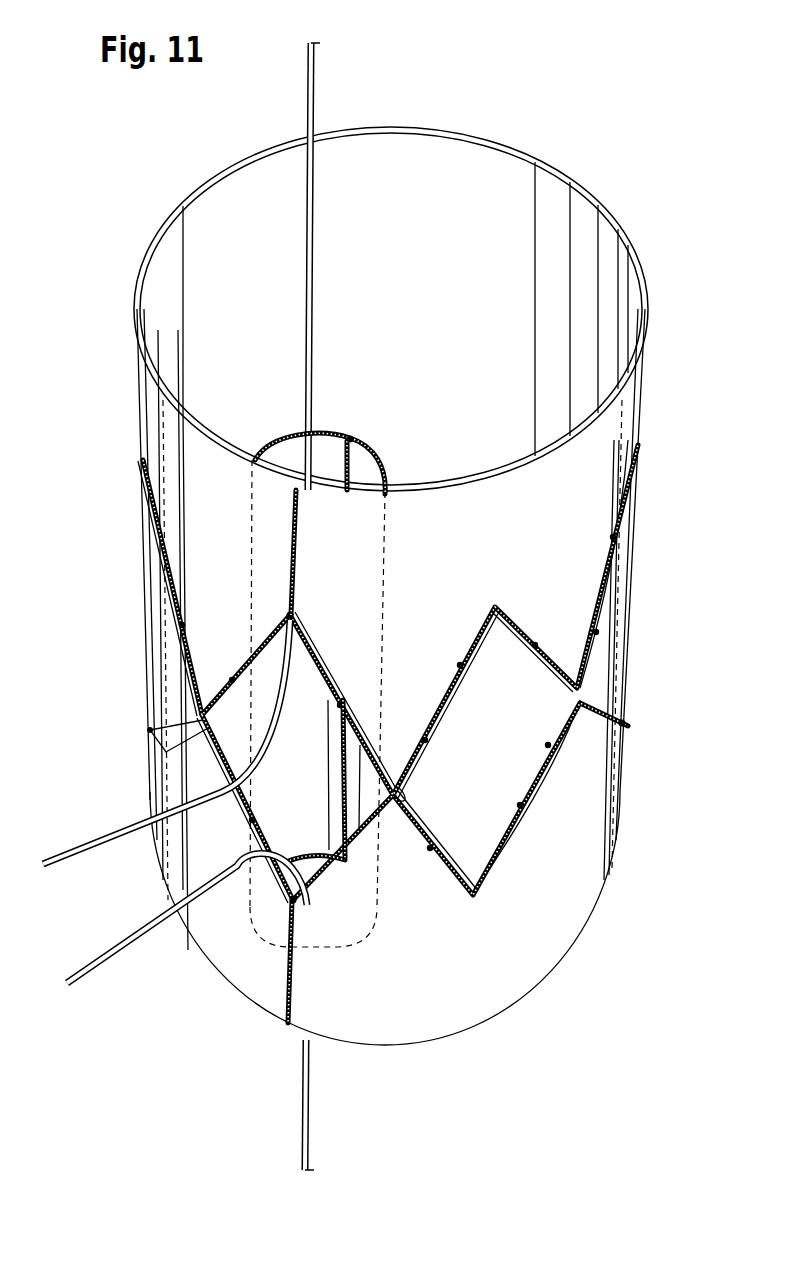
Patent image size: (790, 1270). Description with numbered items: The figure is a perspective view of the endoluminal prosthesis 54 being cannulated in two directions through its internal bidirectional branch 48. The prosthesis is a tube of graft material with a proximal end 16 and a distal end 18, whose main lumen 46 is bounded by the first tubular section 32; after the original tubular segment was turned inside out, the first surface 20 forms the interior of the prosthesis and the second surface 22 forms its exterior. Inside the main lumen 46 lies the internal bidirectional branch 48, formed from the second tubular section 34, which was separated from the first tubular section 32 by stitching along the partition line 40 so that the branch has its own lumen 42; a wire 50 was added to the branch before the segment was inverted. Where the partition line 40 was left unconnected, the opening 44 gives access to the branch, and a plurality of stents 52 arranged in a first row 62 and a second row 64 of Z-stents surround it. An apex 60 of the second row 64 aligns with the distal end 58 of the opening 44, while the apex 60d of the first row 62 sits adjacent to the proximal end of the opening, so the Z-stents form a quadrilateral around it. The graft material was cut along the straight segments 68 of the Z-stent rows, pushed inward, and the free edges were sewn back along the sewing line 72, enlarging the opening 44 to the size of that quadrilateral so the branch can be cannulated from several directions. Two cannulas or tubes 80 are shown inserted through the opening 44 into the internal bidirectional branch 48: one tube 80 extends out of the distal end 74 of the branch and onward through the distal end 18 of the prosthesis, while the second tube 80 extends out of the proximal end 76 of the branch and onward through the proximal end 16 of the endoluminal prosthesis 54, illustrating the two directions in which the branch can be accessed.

The proximal end 16 is at (578, 938).
The distal end 18 is at (598, 222).
The first surface 20 is at (487, 175).
The second surface 22 is at (610, 448).
The first tubular section 32 is at (162, 424).
The second tubular section 34 is at (363, 537).
The partition line 40 is at (298, 570).
The lumen 42 is at (283, 460).
The opening 44 is at (340, 862).
The main lumen 46 is at (392, 170).
The internal bidirectional branch 48 is at (352, 616).
The wire 50 is at (338, 462).
The stents 52 is at (612, 565).
The endoluminal prosthesis 54 is at (658, 345).
The distal end of the opening 58 is at (288, 612).
The apex 60 is at (138, 460).
The apex of the first row of Z-stents 60d is at (310, 906).
The first row of Z-stents 62 is at (622, 718).
The second row of Z-stents 64 is at (610, 592).
The straight segment 68 is at (187, 626).
The sewing line 72 is at (198, 716).
The distal end of the internal bidirectional branch 74 is at (388, 482).
The proximal end of the internal bidirectional branch 76 is at (263, 933).
The cannulas or tubes 80 is at (97, 846).